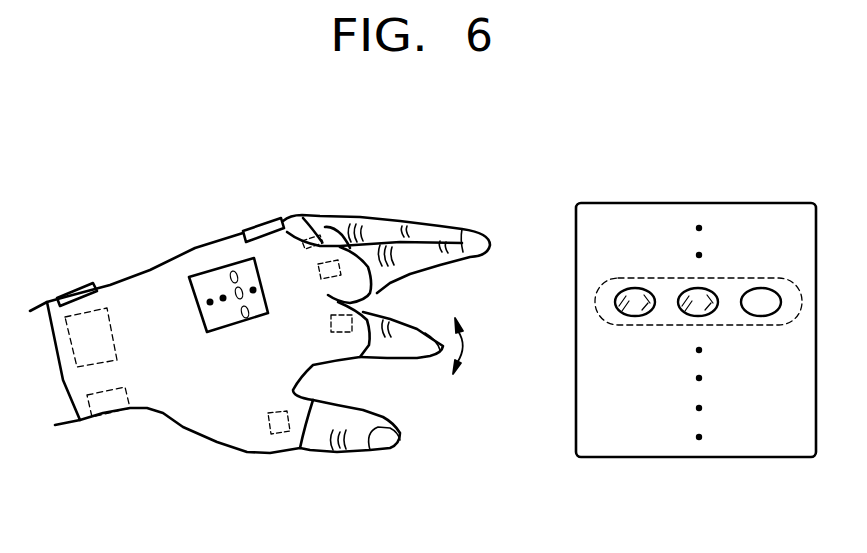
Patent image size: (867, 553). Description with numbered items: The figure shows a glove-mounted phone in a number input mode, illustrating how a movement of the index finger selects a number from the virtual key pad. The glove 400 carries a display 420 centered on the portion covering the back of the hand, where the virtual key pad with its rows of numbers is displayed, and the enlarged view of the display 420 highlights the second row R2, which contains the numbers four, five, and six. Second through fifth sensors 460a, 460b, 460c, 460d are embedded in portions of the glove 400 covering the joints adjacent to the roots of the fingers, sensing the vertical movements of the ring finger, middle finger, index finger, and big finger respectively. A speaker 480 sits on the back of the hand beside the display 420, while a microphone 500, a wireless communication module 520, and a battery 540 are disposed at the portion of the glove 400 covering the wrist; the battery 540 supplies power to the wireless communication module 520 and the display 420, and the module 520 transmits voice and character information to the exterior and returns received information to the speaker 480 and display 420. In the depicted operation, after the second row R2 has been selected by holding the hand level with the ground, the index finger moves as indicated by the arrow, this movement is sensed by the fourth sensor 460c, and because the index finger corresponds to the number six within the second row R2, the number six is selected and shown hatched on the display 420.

The glove 400 is at (183, 427).
The display 420 is at (203, 275).
The second sensor 460a is at (312, 238).
The third sensor 460b is at (337, 265).
The fourth sensor 460c is at (350, 322).
The fifth sensor 460d is at (277, 432).
The speaker 480 is at (260, 225).
The microphone 500 is at (80, 286).
The wireless communication module 520 is at (103, 313).
The battery 540 is at (108, 408).
The second row R2 is at (595, 302).